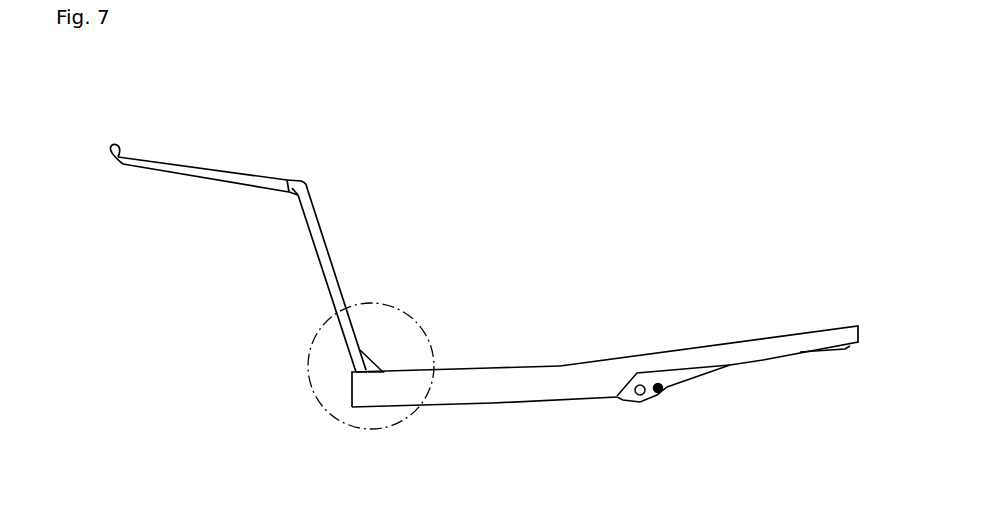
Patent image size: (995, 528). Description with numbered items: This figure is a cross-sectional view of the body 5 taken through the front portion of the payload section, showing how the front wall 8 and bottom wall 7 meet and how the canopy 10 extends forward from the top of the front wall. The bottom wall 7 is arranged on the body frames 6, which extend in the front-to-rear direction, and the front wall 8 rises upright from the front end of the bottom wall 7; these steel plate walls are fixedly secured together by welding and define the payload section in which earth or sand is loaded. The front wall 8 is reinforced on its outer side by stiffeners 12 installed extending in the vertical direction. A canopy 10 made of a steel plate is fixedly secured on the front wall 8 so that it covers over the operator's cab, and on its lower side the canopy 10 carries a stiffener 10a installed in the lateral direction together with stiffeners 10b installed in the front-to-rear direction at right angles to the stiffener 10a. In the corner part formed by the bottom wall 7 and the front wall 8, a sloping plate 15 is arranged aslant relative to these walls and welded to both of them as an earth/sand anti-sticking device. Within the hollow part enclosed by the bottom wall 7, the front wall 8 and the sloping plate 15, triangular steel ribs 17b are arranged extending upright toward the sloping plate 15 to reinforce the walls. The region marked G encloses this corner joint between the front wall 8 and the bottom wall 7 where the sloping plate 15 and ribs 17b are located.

The body 5 is at (763, 360).
The body frame 6 is at (588, 402).
The bottom wall 7 is at (510, 367).
The front wall 8 is at (330, 268).
The canopy 10 is at (228, 168).
The stiffener 10a is at (293, 191).
The stiffener 10b is at (193, 178).
The stiffener 12 is at (312, 240).
The sloping plate 15 is at (376, 362).
The rib 17b is at (367, 370).
The region G is at (317, 398).